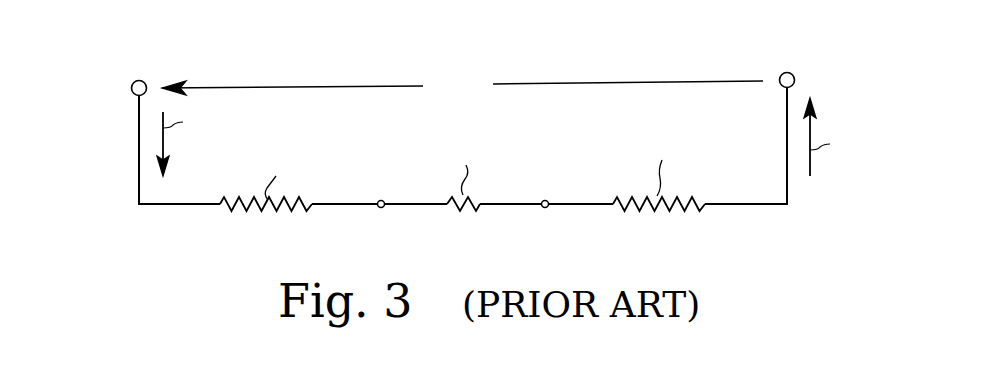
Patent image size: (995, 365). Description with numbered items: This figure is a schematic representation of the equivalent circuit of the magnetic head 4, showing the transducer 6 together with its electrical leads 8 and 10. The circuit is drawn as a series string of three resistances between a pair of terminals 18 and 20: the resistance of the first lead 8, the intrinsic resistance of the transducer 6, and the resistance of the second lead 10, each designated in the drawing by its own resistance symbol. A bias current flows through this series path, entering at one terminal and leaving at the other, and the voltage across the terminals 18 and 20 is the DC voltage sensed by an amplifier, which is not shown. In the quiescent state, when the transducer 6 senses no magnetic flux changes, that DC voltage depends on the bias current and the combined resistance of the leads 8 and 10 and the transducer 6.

The magnetic head 4 is at (89, 79).
The terminal 18 is at (140, 80).
The terminal 20 is at (782, 68).
The electrical lead 8 is at (160, 222).
The transducer 6 is at (543, 222).
The electrical lead 10 is at (560, 222).